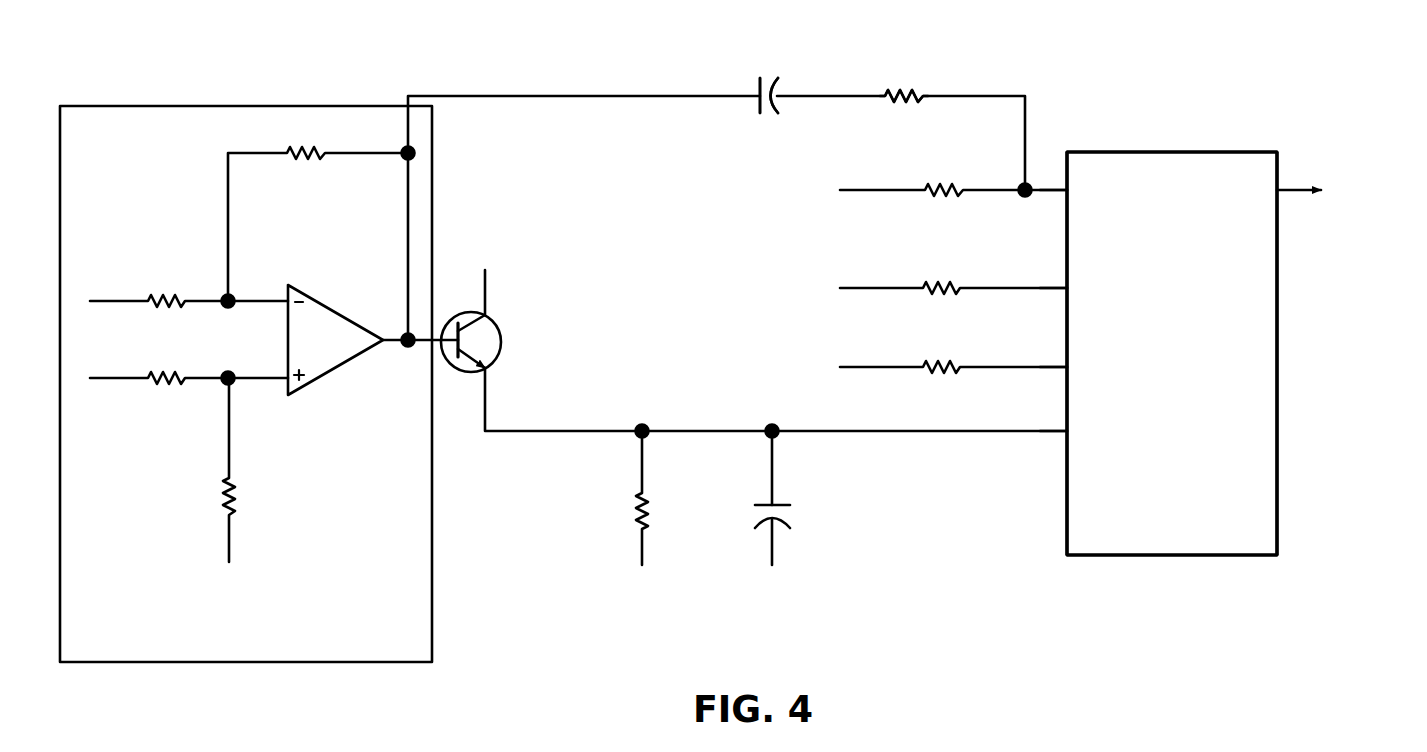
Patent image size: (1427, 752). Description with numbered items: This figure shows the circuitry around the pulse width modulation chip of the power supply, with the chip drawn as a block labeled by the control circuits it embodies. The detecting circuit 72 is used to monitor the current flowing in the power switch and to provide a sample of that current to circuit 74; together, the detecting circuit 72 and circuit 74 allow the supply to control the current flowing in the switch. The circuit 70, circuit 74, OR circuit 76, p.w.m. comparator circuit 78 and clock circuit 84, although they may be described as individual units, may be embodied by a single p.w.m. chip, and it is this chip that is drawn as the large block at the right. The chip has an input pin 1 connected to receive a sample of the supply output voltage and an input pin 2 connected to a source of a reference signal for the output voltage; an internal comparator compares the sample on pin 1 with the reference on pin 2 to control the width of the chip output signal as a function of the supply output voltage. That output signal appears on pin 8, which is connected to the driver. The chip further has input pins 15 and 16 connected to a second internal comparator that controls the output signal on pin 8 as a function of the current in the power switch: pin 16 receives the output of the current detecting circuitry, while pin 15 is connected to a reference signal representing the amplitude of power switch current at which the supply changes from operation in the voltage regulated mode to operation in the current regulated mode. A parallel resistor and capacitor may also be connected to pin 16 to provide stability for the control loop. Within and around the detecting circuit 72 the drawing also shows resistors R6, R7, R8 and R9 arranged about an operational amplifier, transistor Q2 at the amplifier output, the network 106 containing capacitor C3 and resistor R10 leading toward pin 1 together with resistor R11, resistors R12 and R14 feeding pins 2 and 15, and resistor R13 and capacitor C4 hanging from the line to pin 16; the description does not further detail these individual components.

The detecting circuit 72 is at (232, 106).
The capacitor/resistor feedback network 106 is at (785, 45).
The circuit 70 is at (1091, 152).
The circuit 74 is at (1172, 332).
The OR circuit 76 is at (1172, 332).
The p.w.m. comparator circuit 78 is at (1172, 332).
The clock circuit 84 is at (1242, 332).
The resistor R6 is at (189, 287).
The resistor R7 is at (189, 364).
The resistor R8 is at (321, 209).
The resistor R9 is at (242, 485).
The resistor R10 is at (909, 81).
The resistor R11 is at (953, 176).
The resistor R12 is at (953, 272).
The resistor R13 is at (665, 509).
The resistor R14 is at (953, 352).
The capacitor C3 is at (765, 111).
The capacitor C4 is at (792, 509).
The transistor Q2 is at (754, 338).
The input pin 1 is at (1053, 177).
The input pin 2 is at (1053, 277).
The output pin 8 is at (1334, 198).
The input pin 15 is at (1052, 357).
The input pin 16 is at (1052, 419).